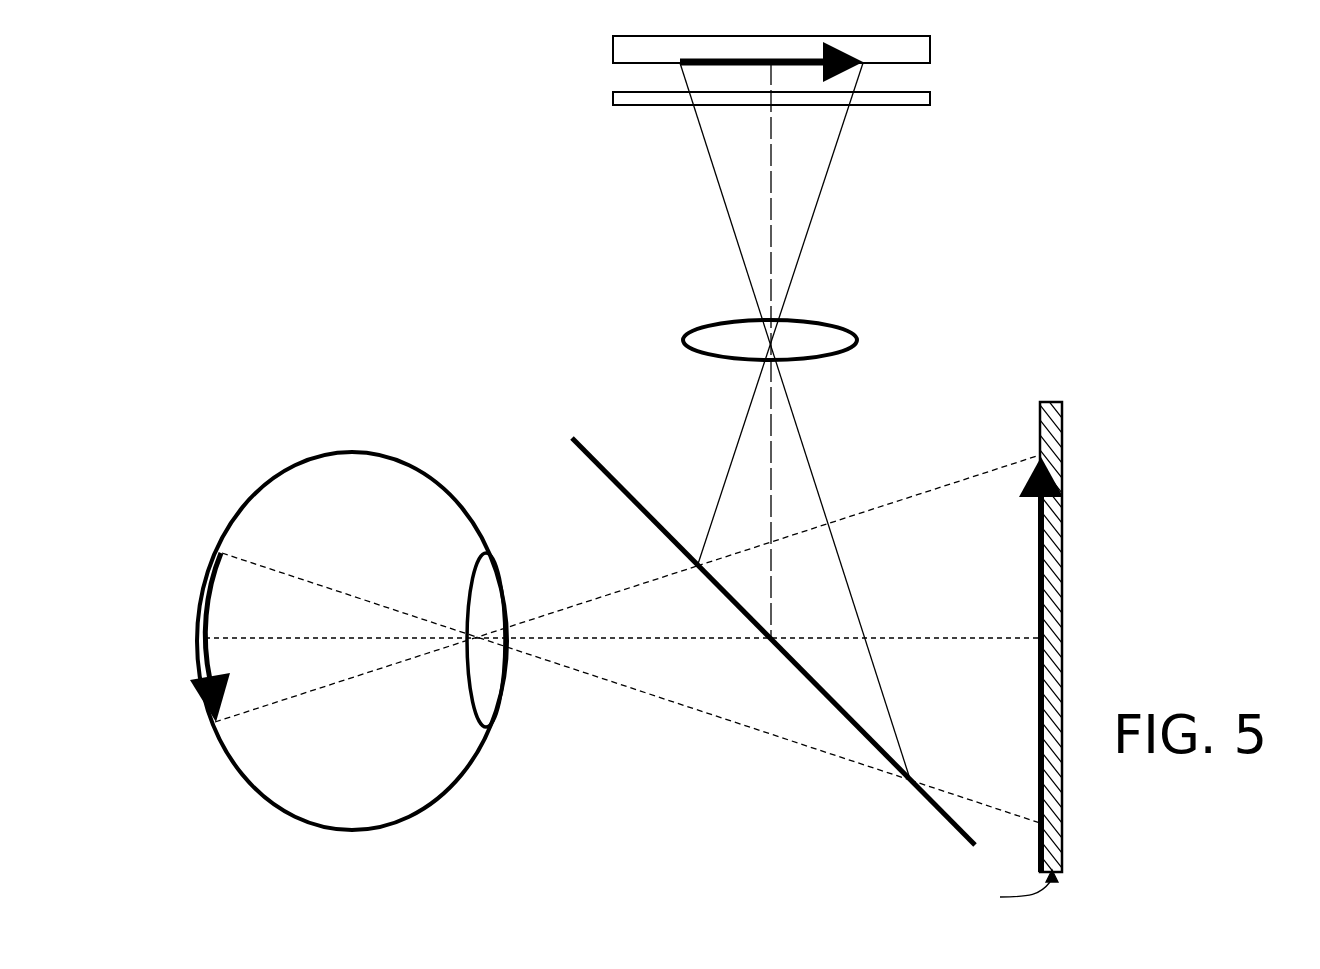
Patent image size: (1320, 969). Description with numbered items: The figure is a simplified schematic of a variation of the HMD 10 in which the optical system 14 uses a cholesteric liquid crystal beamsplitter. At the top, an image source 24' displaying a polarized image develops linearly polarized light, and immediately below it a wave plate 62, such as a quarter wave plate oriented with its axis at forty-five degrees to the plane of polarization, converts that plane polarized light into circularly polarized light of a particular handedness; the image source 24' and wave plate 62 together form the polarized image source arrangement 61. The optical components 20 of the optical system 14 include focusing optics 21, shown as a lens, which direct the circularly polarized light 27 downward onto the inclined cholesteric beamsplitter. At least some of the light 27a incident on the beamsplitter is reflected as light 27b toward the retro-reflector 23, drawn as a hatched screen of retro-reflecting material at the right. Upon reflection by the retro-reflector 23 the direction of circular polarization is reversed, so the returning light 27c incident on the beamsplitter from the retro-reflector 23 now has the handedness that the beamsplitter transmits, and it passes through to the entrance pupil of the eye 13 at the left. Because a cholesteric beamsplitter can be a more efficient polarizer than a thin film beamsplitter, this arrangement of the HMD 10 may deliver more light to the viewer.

The HMD 10 is at (548, 220).
The eye 13 is at (402, 823).
The optical system 14 is at (668, 255).
The optical components 20 is at (833, 314).
The focusing optics 21 is at (664, 340).
The retro-reflector 23 is at (1040, 433).
The image source 24' is at (815, 53).
The light 27 is at (740, 405).
The light incident on the beamsplitter 27a is at (812, 462).
The reflected light 27b is at (930, 483).
The retro-reflected light ray 27c is at (732, 723).
The polarized image source assembly 61 is at (940, 74).
The wave plate 62 is at (651, 106).